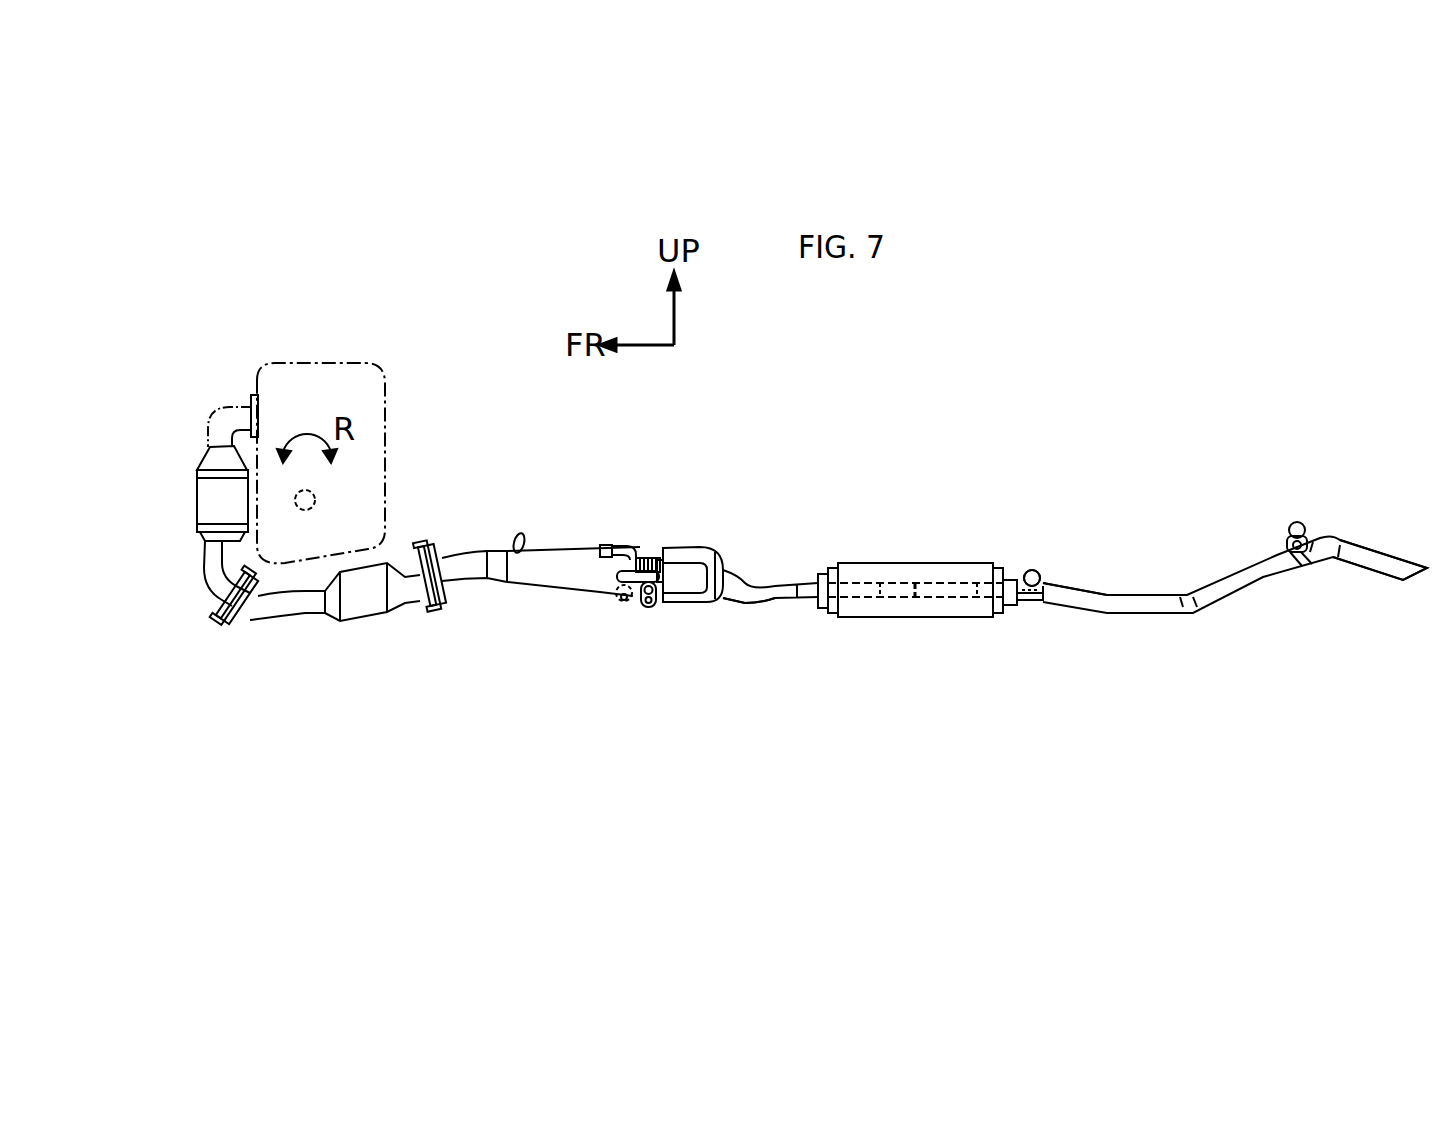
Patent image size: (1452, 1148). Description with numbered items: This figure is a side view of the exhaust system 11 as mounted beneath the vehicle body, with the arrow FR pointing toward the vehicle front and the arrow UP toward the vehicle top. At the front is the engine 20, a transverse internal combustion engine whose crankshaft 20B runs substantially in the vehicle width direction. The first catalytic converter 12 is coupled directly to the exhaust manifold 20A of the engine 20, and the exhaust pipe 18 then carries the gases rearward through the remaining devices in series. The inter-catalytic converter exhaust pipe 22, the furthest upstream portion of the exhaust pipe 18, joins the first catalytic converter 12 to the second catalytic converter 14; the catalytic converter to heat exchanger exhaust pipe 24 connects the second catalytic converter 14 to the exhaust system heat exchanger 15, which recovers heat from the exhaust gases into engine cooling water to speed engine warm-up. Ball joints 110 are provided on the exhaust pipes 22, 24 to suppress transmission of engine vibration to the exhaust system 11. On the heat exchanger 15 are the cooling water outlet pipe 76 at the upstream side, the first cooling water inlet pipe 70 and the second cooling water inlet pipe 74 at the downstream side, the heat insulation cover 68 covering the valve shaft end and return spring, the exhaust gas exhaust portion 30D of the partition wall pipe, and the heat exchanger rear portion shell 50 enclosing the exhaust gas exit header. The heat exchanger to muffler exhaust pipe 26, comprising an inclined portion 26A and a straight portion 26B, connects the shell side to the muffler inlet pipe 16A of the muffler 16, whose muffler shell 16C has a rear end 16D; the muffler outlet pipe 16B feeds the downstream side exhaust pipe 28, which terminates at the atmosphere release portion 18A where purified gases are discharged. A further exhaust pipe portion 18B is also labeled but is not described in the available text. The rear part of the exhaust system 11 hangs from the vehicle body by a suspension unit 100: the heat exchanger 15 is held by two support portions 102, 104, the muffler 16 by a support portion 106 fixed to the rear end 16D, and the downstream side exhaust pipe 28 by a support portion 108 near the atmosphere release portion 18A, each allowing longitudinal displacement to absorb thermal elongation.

The exhaust system 11 is at (1018, 463).
The first catalytic converter 12 is at (203, 501).
The second catalytic converter 14 is at (368, 603).
The exhaust system heat exchanger 15 is at (572, 563).
The muffler 16 is at (930, 618).
The muffler inlet pipe 16A is at (880, 586).
The muffler outlet pipe 16B is at (977, 586).
The muffler shell 16C is at (947, 568).
The rear end of muffler shell 16D is at (1015, 607).
The exhaust pipe 18 is at (1115, 589).
The atmosphere release portion 18A is at (1425, 575).
The bent portion of exhaust pipe 18B is at (726, 606).
The engine 20 is at (387, 369).
The exhaust manifold 20A is at (240, 404).
The crankshaft 20B is at (312, 497).
The inter-catalytic converter exhaust pipe 22 is at (290, 623).
The catalytic converter to heat exchanger exhaust pipe 24 is at (460, 549).
The heat exchanger to muffler exhaust pipe 26 is at (782, 578).
The inclined portion 26A is at (760, 598).
The straight portion 26B is at (802, 597).
The downstream side exhaust pipe 28 is at (1147, 613).
The exhaust gas exhaust portion 30D is at (663, 558).
The heat exchanger rear portion shell 50 is at (697, 548).
The heat insulation cover 68 is at (688, 597).
The first cooling water inlet pipe 70 is at (646, 556).
The second cooling water inlet pipe 74 is at (628, 543).
The cooling water outlet pipe 76 is at (523, 534).
The suspension unit 100 is at (1032, 578).
The support portion 102 is at (651, 611).
The support portion 104 is at (618, 606).
The support portion 106 is at (1042, 573).
The support portion 108 is at (1300, 522).
The ball joints 110 is at (225, 626).